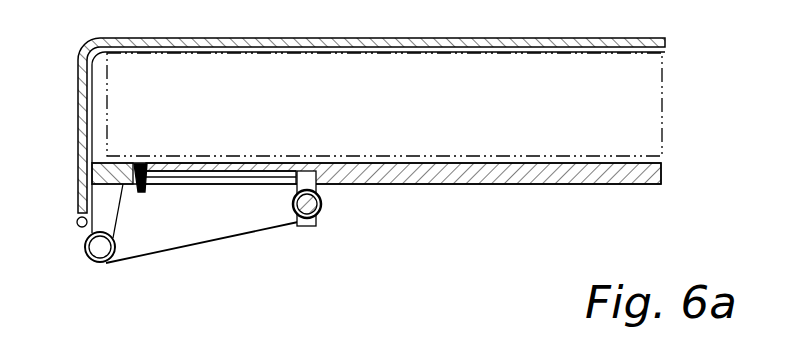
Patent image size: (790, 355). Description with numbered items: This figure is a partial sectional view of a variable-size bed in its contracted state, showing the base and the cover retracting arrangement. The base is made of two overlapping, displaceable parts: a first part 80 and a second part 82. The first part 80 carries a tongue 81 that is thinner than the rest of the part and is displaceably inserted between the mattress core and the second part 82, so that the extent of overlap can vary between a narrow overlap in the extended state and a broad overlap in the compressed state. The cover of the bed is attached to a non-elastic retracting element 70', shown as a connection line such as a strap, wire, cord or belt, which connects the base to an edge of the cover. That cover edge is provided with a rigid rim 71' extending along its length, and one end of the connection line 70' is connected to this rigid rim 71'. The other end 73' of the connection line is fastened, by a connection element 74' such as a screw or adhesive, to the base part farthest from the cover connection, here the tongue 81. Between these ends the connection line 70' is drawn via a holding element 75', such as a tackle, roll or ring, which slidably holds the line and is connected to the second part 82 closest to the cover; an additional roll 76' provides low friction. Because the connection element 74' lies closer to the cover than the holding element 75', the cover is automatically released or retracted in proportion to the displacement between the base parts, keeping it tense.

The rigid rim 71' is at (340, 148).
The tongue 81 is at (268, 163).
The first part 80 is at (508, 184).
The other end of the connection line 73' is at (162, 143).
The second part 82 is at (207, 187).
The connection element 74' is at (143, 254).
The additional roll 76' is at (75, 279).
The non-elastic retracting element 70' is at (212, 266).
The holding element 75' is at (353, 202).